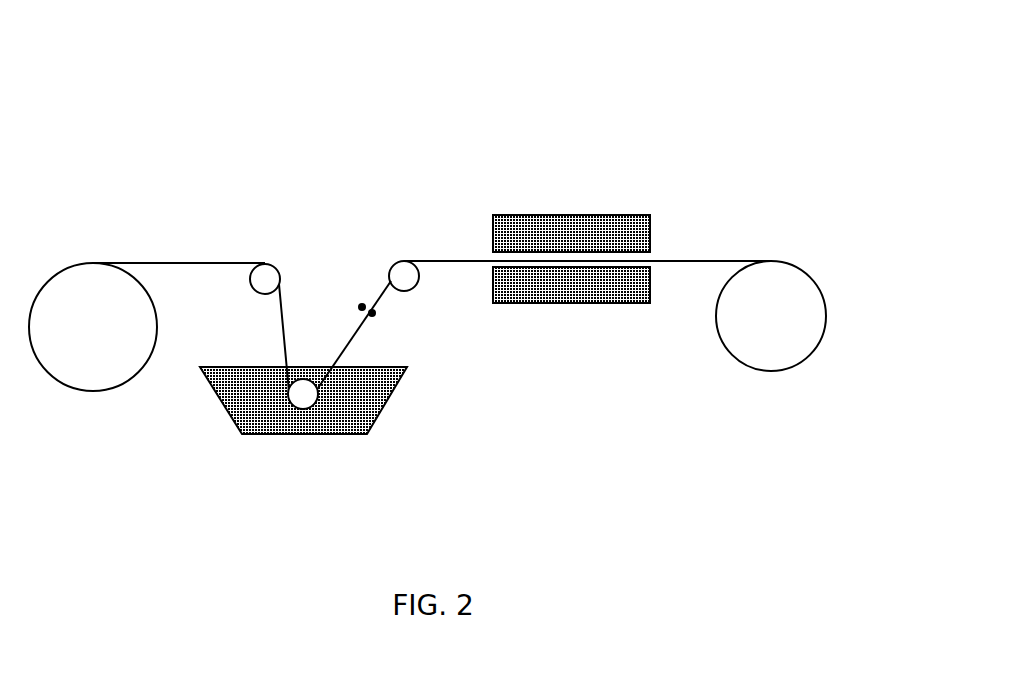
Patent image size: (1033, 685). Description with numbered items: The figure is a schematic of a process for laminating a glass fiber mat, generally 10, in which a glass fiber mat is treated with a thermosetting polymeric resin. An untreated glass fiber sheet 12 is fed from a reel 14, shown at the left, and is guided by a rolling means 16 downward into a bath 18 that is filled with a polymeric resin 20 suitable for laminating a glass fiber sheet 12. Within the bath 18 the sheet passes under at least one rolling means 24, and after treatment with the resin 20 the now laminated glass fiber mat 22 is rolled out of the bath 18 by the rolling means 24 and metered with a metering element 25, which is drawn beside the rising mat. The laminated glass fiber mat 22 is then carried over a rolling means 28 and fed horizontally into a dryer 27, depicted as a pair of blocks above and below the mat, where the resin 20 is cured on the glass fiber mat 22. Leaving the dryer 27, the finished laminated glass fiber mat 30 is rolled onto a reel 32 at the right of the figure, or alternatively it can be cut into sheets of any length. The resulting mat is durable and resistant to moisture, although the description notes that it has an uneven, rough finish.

The process for laminating a glass fiber mat 10 is at (624, 122).
The untreated glass fiber sheet 12 is at (157, 263).
The reel 14 is at (68, 363).
The rolling means 16 is at (266, 273).
The bath 18 is at (372, 430).
The polymeric resin 20 is at (243, 410).
The laminated glass fiber mat 22 is at (343, 350).
The rolling means 24 is at (303, 400).
The metering element 25 is at (375, 315).
The dryer 27 is at (520, 227).
The rolling means 28 is at (402, 268).
The finished laminated glass fiber mat 30 is at (677, 258).
The reel 32 is at (760, 332).